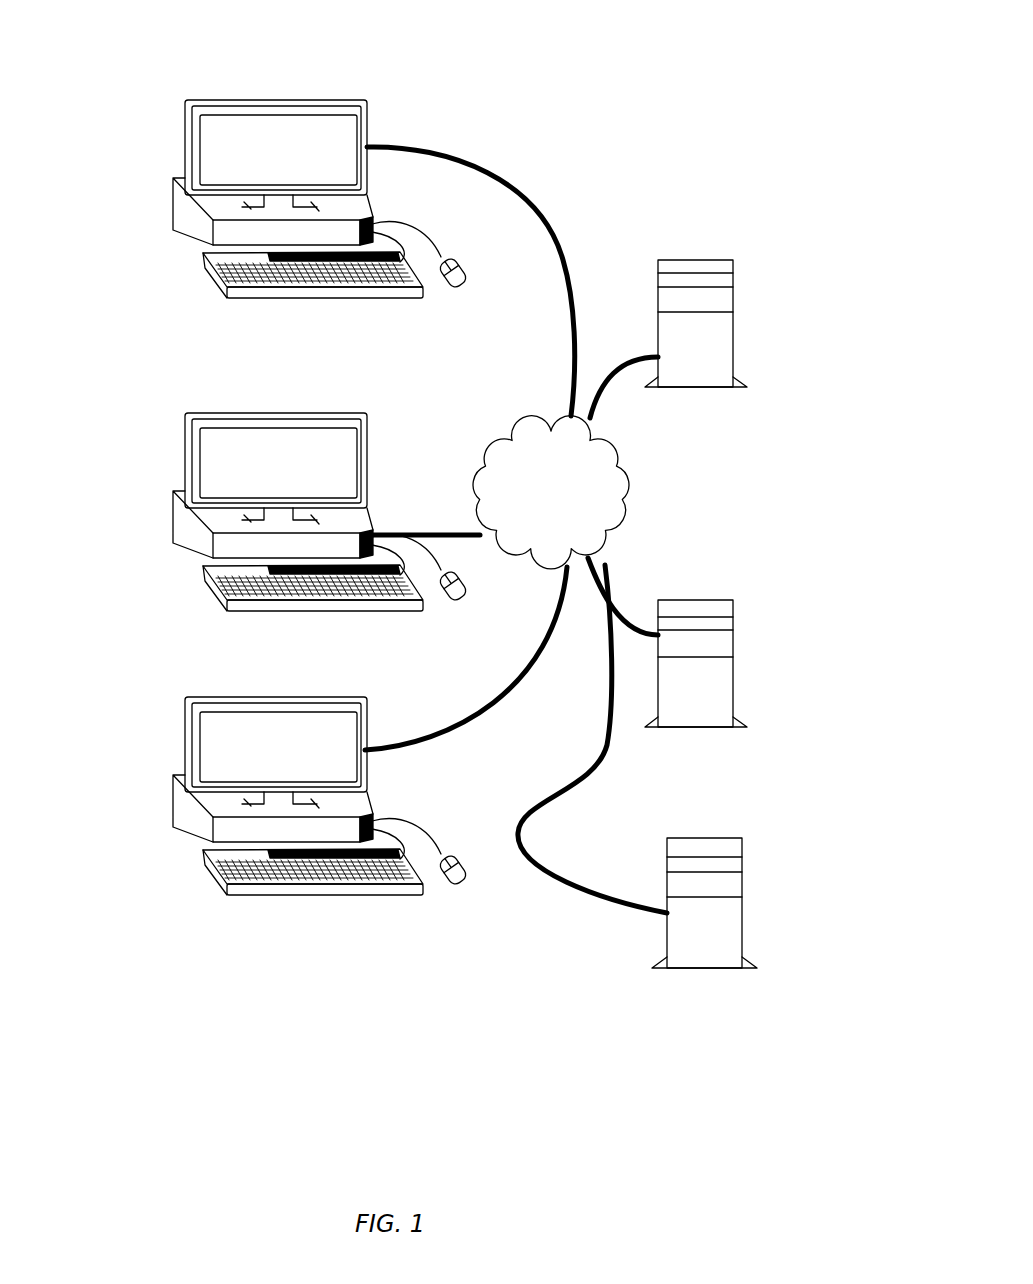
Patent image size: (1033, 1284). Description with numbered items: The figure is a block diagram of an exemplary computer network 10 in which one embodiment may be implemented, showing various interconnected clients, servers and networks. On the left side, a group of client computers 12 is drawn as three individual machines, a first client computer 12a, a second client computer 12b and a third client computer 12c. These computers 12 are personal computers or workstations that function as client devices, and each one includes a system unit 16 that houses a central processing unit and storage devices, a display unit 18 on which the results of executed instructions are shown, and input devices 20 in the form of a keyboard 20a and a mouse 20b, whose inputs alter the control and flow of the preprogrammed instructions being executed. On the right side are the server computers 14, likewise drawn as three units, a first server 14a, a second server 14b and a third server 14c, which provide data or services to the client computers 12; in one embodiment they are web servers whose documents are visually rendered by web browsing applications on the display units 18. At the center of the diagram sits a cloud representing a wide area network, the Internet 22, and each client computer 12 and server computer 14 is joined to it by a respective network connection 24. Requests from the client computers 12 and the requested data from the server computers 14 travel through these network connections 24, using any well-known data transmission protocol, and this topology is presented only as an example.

The computer network 10 is at (503, 87).
The client computers 12 is at (88, 192).
The client computer 12a is at (167, 195).
The client computer 12b is at (161, 507).
The client computer 12c is at (159, 790).
The server computers 14 is at (738, 320).
The server computer 14a is at (737, 273).
The server computer 14b is at (735, 708).
The server computer 14c is at (704, 903).
The system unit 16 is at (176, 240).
The display unit 18 is at (328, 133).
The input devices 20 is at (366, 287).
The keyboard 20a is at (250, 298).
The mouse 20b is at (467, 263).
The Internet 22 is at (551, 492).
The network connections 24 is at (520, 185).